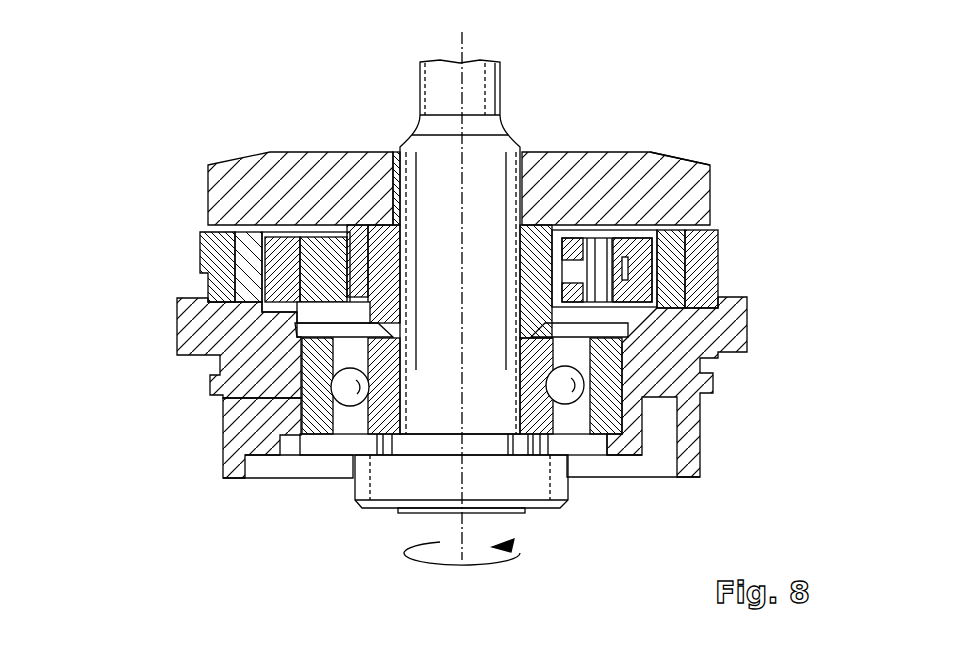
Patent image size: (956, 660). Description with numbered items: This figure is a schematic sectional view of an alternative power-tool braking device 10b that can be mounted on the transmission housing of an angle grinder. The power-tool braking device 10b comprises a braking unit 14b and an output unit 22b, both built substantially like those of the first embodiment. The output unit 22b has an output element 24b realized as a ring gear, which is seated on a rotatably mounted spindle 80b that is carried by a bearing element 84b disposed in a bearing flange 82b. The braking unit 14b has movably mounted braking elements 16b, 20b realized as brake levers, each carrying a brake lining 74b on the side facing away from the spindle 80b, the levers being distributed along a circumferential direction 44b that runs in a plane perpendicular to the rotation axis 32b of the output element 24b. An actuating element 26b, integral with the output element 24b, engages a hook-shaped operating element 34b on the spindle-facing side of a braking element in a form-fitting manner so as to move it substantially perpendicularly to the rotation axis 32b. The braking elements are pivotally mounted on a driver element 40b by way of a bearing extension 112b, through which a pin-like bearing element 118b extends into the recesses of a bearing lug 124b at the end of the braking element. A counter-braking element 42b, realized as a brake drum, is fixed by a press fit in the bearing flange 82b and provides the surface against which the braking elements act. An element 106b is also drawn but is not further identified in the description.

The power-tool braking device 10b is at (144, 167).
The braking unit 14b is at (150, 260).
The braking element 16b is at (345, 262).
The braking element 20b is at (655, 230).
The output unit 22b is at (282, 112).
The output element 24b is at (612, 165).
The actuating element 26b is at (265, 266).
The rotation axis 32b is at (466, 43).
The operating element 34b is at (330, 316).
The driver element 40b is at (240, 370).
The counter-braking element 42b is at (670, 262).
The circumferential direction 44b is at (515, 552).
The brake lining 74b is at (380, 326).
The spindle 80b is at (369, 497).
The bearing flange 82b is at (735, 333).
The bearing element 84b is at (312, 412).
The housing wall 106b is at (680, 158).
The bearing extension 112b is at (578, 252).
The bearing element 118b is at (600, 290).
The bearing lug 124b is at (630, 245).